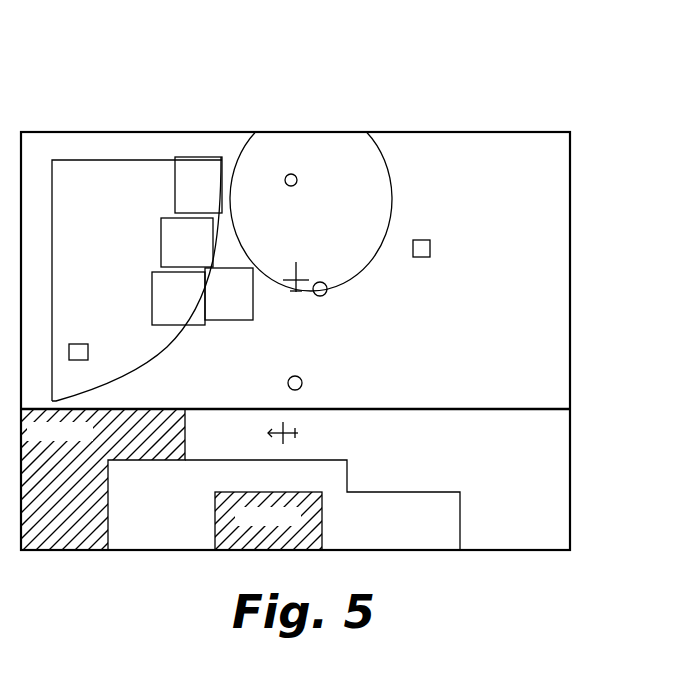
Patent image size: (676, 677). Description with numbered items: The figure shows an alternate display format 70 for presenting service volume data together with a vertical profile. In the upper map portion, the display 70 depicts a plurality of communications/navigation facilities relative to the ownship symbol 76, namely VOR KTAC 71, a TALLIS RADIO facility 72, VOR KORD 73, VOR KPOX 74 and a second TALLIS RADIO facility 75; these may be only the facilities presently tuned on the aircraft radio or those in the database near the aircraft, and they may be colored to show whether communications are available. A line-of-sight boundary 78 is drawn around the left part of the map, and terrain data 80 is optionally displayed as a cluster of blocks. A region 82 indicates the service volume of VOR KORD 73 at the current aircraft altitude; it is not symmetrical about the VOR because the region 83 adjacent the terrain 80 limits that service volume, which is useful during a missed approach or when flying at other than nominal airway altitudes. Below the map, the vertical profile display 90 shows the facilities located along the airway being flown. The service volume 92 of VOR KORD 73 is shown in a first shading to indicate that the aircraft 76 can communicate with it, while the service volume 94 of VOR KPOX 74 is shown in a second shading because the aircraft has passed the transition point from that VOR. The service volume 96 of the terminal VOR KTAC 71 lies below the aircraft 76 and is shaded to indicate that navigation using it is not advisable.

The display format 70 is at (367, 109).
The VOR KTAC 71 is at (320, 297).
The communications/navigation facility 72 is at (423, 240).
The VOR KORD 73 is at (291, 174).
The VOR KPOX 74 is at (297, 377).
The communications/navigation facility 75 is at (80, 344).
The ownship symbol 76 is at (304, 268).
The line-of-sight boundary 78 is at (78, 160).
The terrain data 80 is at (162, 245).
The service volume region 82 is at (377, 146).
The terrain-limited region 83 is at (239, 158).
The vertical profile display 90 is at (583, 411).
The service volume of VOR KORD 92 is at (393, 492).
The service volume of VOR KPOX 94 is at (118, 461).
The service volume of VOR KTAC 96 is at (322, 533).